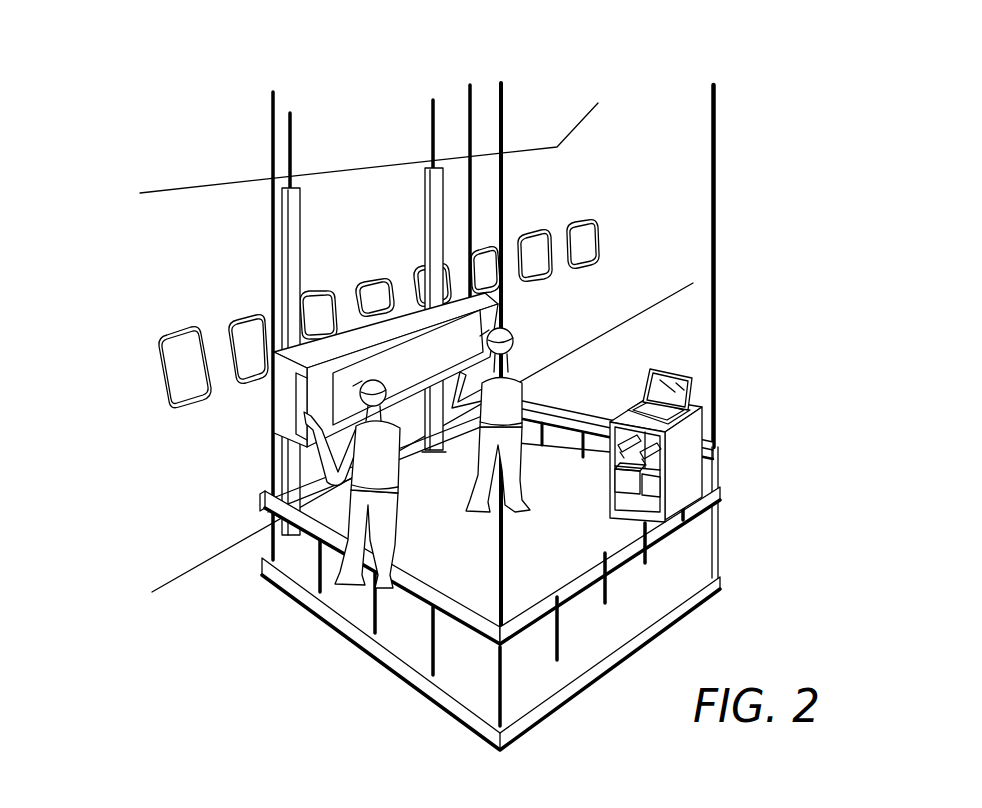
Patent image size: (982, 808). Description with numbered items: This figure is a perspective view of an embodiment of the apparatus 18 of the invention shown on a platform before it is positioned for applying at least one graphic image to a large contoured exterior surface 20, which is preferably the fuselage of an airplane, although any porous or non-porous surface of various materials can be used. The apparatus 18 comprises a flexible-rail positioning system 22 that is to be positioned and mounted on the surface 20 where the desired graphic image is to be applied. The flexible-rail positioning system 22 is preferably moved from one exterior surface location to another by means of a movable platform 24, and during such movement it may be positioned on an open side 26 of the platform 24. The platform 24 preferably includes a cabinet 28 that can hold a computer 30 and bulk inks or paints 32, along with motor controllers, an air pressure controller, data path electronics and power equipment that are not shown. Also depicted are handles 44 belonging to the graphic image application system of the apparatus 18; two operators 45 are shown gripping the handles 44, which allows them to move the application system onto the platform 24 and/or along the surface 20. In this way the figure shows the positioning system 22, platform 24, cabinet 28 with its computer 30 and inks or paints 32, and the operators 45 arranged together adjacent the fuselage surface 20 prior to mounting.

The apparatus 18 is at (748, 326).
The large contoured exterior surface 20 is at (207, 220).
The flexible-rail positioning system 22 is at (443, 208).
The movable platform 24 is at (468, 680).
The open side 26 is at (293, 542).
The cabinet 28 is at (695, 513).
The computer 30 is at (663, 388).
The bulk inks or paints 32 is at (618, 505).
The handles 44 is at (303, 393).
The operators 45 is at (396, 532).